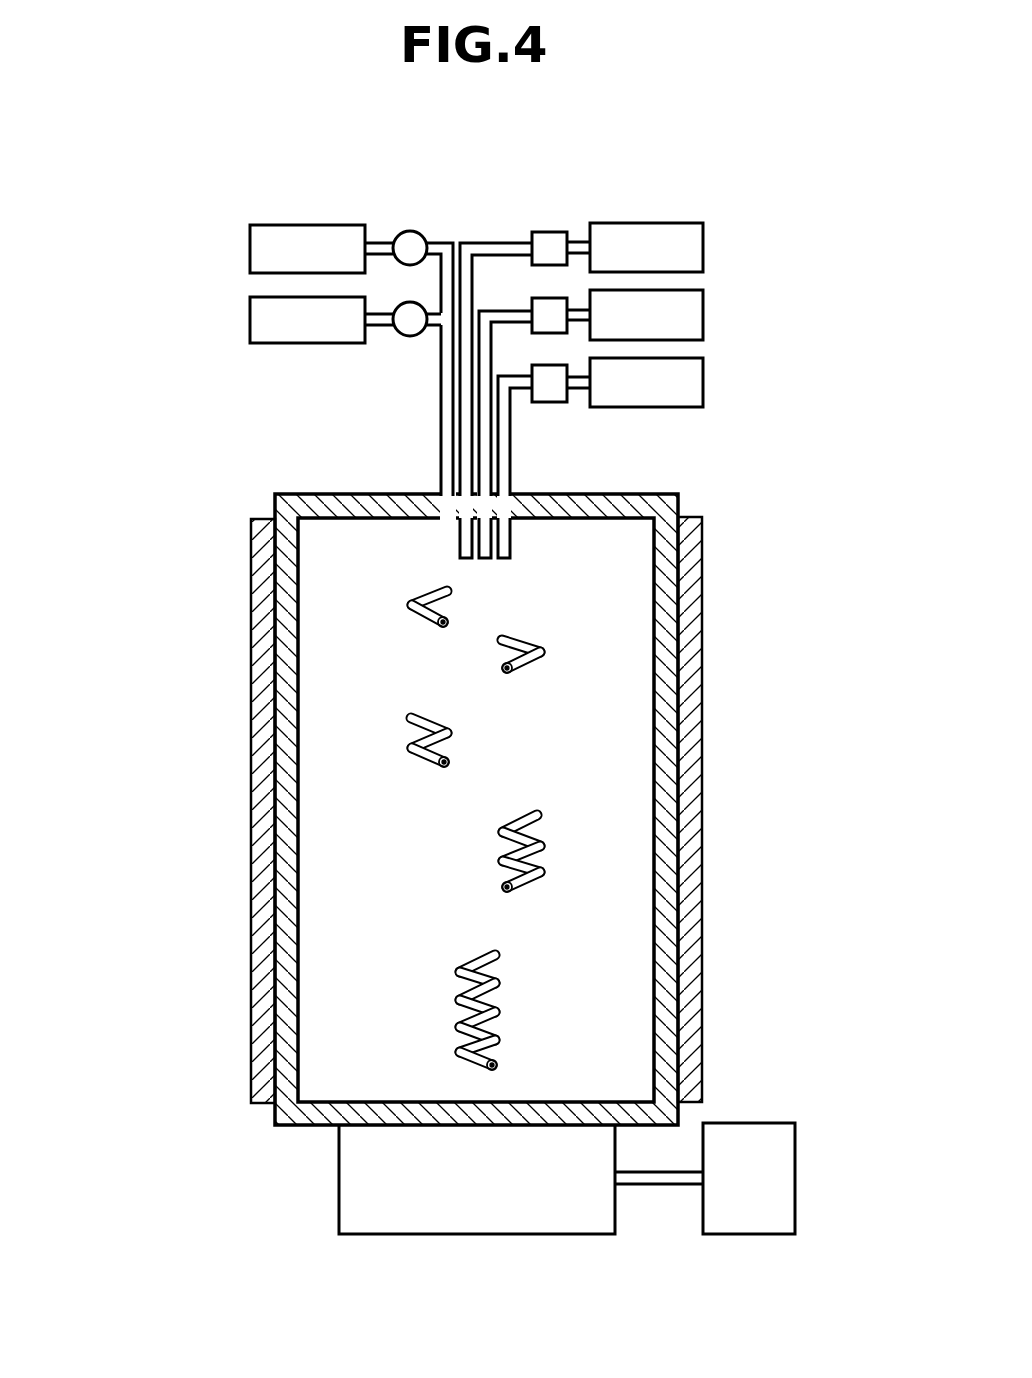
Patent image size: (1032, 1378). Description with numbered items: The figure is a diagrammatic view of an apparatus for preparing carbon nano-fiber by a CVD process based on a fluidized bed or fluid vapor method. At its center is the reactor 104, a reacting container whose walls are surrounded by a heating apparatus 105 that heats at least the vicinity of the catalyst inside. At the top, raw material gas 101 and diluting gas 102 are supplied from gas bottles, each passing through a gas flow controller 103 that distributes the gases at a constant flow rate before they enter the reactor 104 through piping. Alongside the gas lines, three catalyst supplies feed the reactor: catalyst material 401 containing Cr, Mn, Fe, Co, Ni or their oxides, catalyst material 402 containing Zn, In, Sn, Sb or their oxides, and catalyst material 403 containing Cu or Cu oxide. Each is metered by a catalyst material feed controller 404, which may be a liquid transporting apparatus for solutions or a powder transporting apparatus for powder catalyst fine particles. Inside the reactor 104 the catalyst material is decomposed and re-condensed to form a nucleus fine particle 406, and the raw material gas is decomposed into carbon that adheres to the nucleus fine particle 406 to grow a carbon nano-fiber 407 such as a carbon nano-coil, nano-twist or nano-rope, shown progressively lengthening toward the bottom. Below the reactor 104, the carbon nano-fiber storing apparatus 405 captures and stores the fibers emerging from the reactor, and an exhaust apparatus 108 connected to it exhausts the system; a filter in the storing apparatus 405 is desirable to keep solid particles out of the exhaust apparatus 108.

The raw material gas 101 is at (290, 250).
The diluting gas 102 is at (290, 321).
The gas flow controller 103 is at (402, 326).
The reactor 104 is at (344, 507).
The heating apparatus 105 is at (268, 705).
The exhaust apparatus 108 is at (740, 1217).
The catalyst material 401 is at (683, 244).
The catalyst material 402 is at (683, 311).
The catalyst material 403 is at (683, 378).
The catalyst material feed controller 404 is at (545, 388).
The carbon nano-fiber storing apparatus 405 is at (440, 1218).
The nucleus fine particle 406 is at (435, 767).
The carbon nano-fiber 407 is at (535, 873).